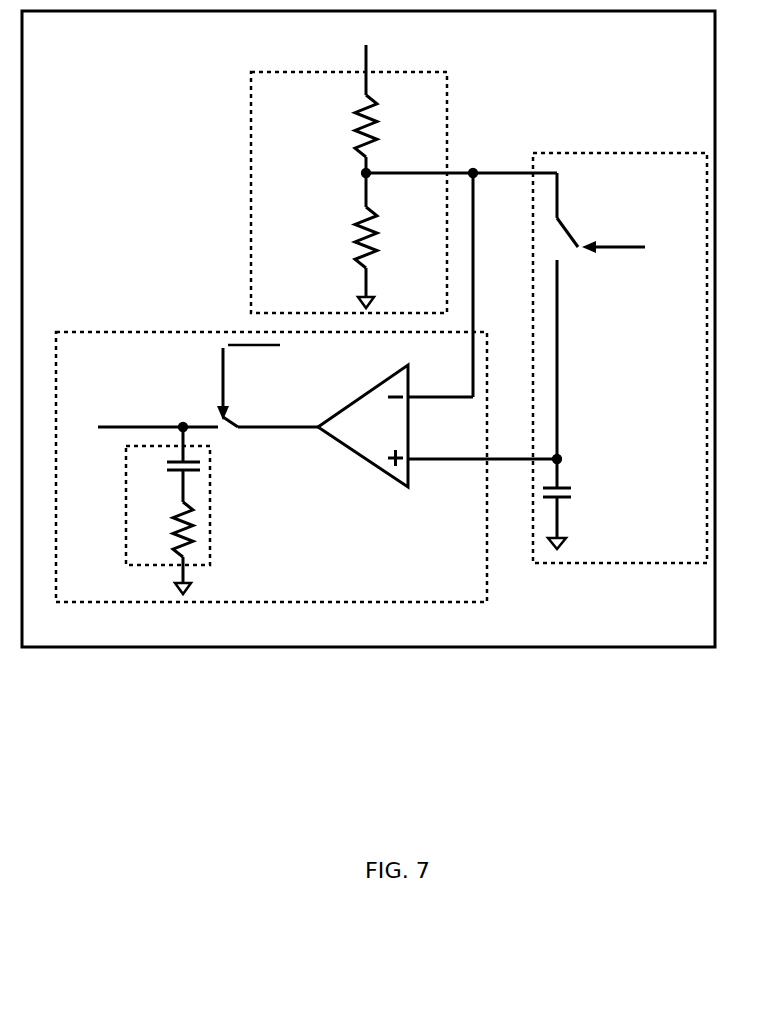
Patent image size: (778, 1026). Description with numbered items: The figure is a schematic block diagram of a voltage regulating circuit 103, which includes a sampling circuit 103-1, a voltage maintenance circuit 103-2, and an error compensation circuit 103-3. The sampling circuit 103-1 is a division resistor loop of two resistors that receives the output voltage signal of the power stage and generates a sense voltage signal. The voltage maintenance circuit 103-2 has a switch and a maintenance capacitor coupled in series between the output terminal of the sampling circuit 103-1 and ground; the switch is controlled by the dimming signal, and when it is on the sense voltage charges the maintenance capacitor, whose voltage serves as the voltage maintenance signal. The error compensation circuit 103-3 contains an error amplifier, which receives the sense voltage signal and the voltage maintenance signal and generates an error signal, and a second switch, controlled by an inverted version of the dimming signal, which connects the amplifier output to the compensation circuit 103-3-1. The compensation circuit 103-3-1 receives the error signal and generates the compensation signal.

The voltage regulating circuit 103 is at (705, 637).
The sampling circuit 103-1 is at (318, 300).
The voltage maintenance circuit 103-2 is at (605, 436).
The error compensation circuit 103-3 is at (271, 467).
The compensation circuit 103-3-1 is at (318, 524).